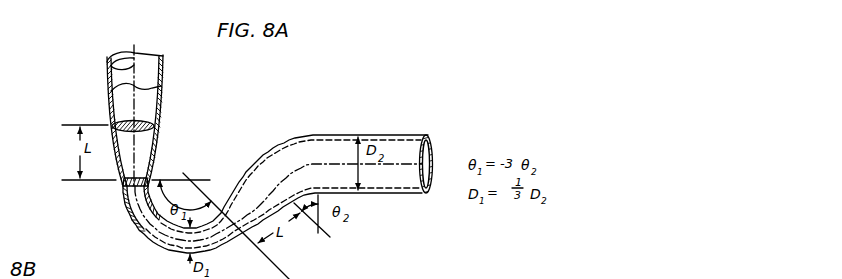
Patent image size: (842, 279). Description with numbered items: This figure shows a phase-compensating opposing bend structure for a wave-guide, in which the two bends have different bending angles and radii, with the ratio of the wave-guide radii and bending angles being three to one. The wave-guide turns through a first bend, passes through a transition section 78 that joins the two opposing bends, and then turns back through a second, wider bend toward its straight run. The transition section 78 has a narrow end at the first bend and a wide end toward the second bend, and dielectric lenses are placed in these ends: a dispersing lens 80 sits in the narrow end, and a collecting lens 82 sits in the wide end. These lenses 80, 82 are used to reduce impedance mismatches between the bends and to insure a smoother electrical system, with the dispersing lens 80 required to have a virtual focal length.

The transition section 78 is at (161, 148).
The dispersing lens 80 is at (123, 186).
The collecting lens 82 is at (150, 119).